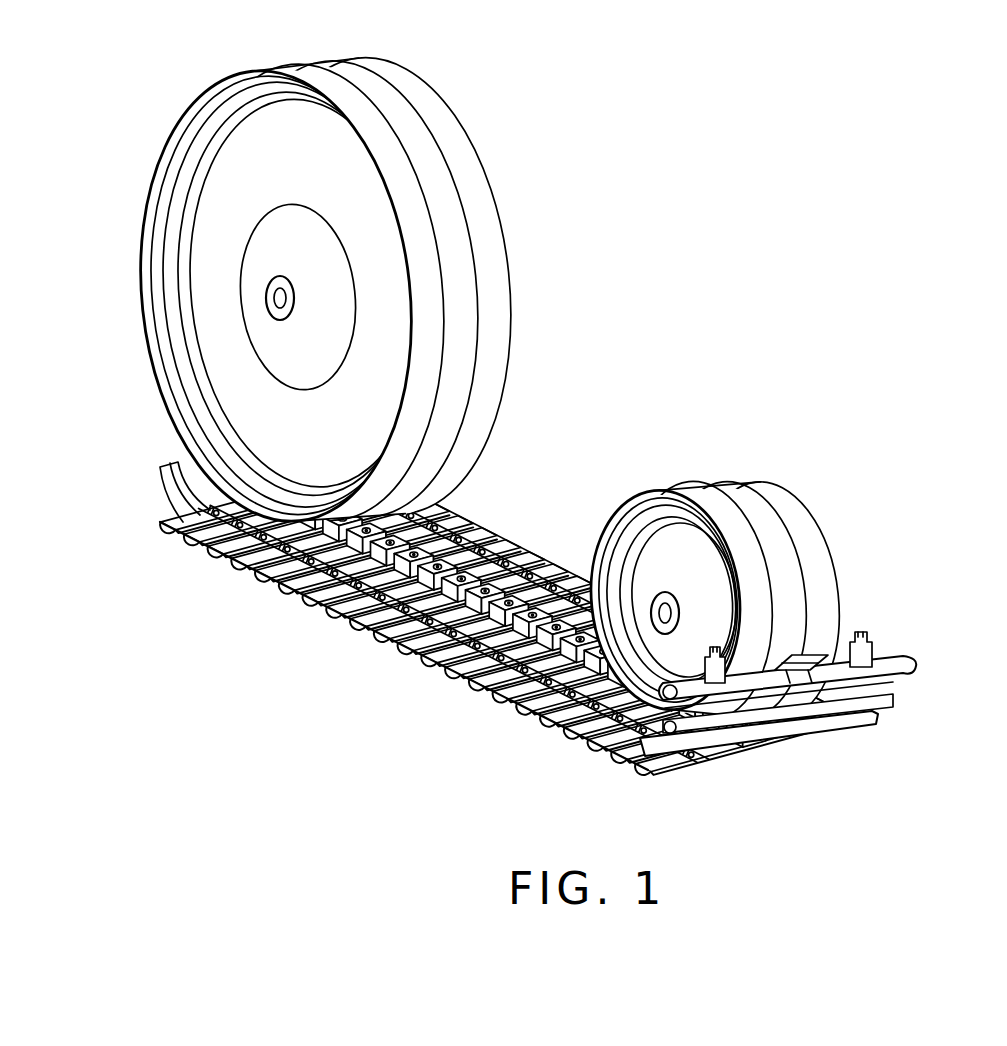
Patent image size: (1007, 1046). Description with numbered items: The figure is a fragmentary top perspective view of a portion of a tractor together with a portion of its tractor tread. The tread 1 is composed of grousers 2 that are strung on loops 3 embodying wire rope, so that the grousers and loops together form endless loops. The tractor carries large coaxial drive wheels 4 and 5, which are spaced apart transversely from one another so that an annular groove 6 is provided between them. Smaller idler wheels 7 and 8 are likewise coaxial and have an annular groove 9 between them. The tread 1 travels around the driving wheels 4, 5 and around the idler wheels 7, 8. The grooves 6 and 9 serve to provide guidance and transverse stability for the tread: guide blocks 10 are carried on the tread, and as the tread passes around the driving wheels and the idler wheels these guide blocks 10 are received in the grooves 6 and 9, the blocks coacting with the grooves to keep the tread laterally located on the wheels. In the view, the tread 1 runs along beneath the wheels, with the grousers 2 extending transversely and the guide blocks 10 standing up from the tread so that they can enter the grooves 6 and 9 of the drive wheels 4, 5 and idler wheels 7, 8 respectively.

The tread 1 is at (326, 633).
The grousers 2 is at (910, 667).
The loops 3 is at (713, 643).
The drive wheel 4 is at (340, 286).
The drive wheel 5 is at (443, 126).
The annular groove 6 is at (456, 254).
The idler wheel 7 is at (761, 548).
The idler wheel 8 is at (825, 537).
The annular groove 9 is at (738, 500).
The guide blocks 10 is at (787, 660).